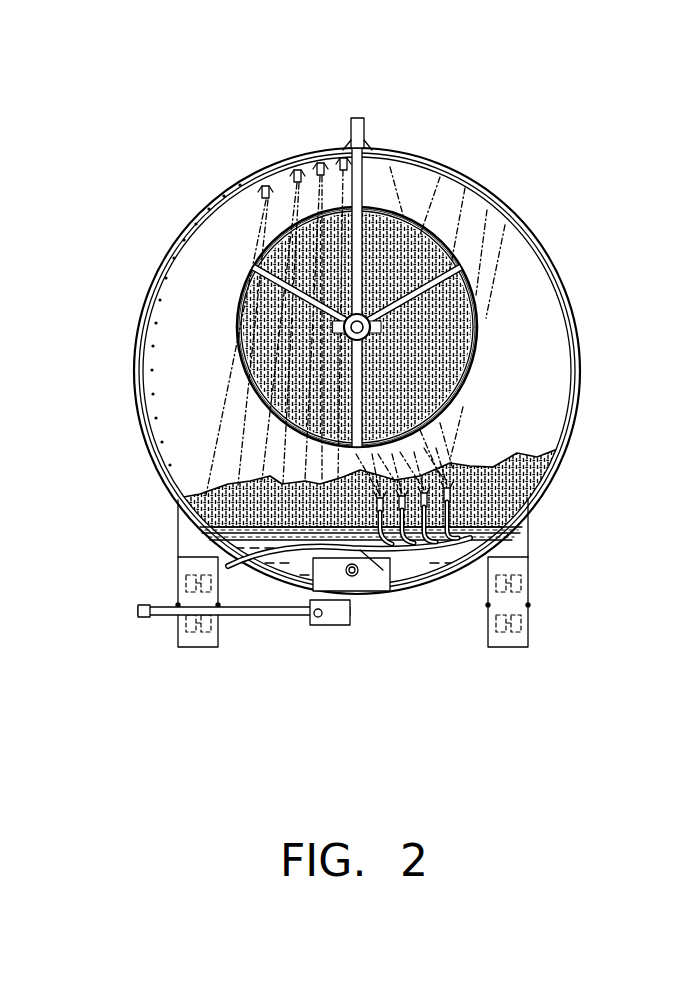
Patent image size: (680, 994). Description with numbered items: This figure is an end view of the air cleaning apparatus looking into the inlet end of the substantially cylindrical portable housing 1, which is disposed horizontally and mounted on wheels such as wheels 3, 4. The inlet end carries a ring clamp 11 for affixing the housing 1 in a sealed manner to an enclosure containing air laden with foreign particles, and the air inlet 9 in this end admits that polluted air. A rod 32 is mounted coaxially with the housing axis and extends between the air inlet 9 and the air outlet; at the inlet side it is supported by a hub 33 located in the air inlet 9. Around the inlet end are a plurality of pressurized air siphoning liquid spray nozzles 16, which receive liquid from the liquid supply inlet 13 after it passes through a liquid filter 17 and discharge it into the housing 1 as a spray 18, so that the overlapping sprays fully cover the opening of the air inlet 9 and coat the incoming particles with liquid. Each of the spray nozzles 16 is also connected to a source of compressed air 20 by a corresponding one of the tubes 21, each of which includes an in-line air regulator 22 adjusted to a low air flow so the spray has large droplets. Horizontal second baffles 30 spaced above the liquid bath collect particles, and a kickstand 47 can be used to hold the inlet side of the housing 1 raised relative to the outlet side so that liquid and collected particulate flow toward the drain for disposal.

The housing 1 is at (473, 182).
The wheel 3 is at (197, 637).
The wheel 4 is at (500, 640).
The air inlet 9 is at (480, 335).
The ring clamp 11 is at (357, 120).
The liquid supply inlet 13 is at (353, 577).
The spray nozzles 16 is at (263, 197).
The liquid filter 17 is at (373, 600).
The spray 18 is at (250, 312).
The source of compressed air 20 is at (383, 570).
The tubes 21 is at (470, 493).
The in-line air regulator 22 is at (528, 555).
The second baffles 30 is at (520, 514).
The rod 32 is at (408, 243).
The hub 33 is at (372, 320).
The kickstand 47 is at (315, 623).